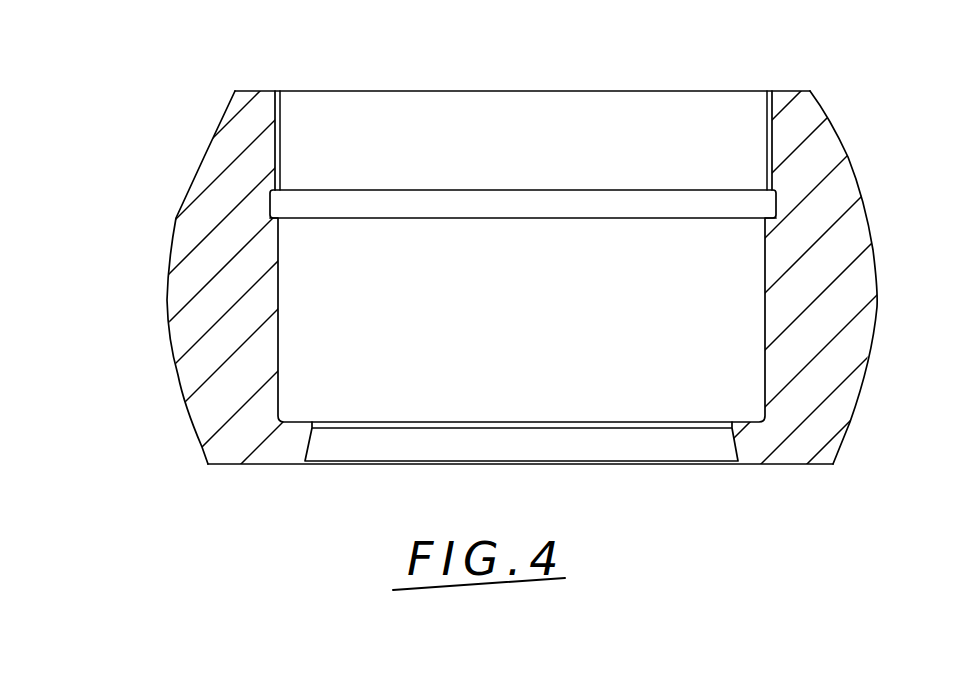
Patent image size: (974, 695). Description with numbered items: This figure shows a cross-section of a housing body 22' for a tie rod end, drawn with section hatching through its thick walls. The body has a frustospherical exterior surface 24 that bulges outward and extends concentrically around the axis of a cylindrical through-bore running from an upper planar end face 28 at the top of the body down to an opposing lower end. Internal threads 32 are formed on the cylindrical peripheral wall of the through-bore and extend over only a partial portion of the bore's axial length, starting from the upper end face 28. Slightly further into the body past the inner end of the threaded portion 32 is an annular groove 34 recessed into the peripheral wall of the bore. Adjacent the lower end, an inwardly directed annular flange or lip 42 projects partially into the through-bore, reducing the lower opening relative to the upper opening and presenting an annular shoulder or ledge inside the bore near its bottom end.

The housing body 22' is at (487, 275).
The frustospherical exterior surface 24 is at (873, 222).
The upper planar end face 28 is at (258, 90).
The internal threads 32 is at (278, 121).
The annular groove 34 is at (437, 207).
The annular flange or lip 42 is at (735, 438).